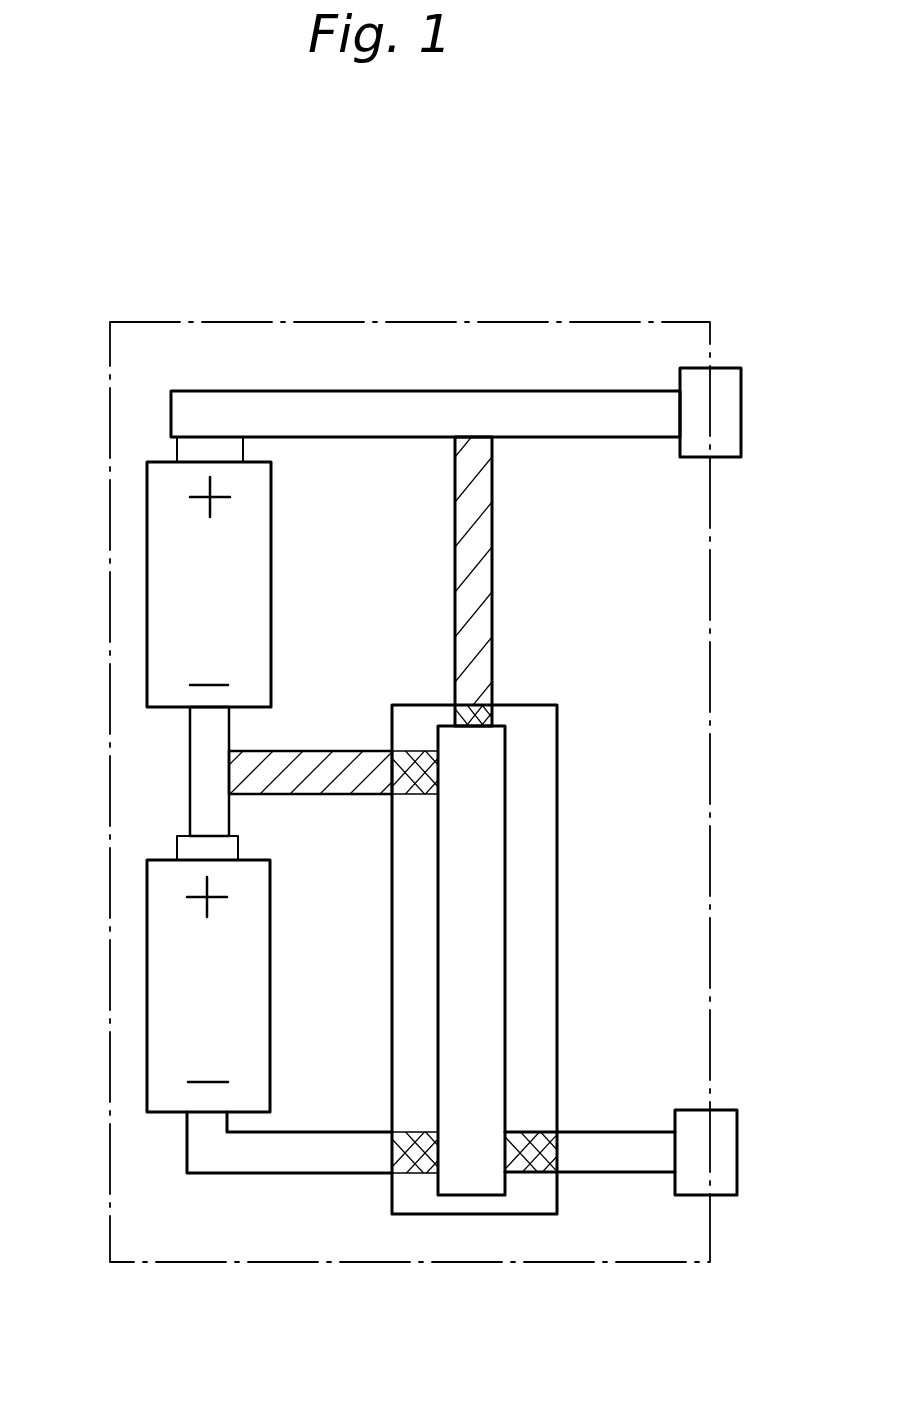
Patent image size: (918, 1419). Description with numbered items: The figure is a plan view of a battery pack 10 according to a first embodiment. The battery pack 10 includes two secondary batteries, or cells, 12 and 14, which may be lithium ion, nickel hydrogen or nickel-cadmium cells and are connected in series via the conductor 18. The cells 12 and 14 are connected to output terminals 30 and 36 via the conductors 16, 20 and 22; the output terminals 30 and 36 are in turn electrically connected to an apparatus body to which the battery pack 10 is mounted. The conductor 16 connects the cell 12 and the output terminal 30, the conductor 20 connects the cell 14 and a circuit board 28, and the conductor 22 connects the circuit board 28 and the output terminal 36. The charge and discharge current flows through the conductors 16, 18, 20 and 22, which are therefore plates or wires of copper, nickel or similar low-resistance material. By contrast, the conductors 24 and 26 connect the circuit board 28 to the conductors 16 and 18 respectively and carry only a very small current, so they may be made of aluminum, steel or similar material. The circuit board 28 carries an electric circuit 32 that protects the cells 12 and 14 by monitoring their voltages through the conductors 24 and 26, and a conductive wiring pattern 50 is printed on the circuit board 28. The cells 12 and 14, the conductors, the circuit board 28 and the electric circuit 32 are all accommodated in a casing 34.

The battery pack 10 is at (430, 190).
The secondary battery 12 is at (272, 528).
The secondary battery 14 is at (270, 931).
The conductor 16 is at (272, 391).
The conductor 18 is at (188, 774).
The conductor 20 is at (303, 1174).
The conductor 22 is at (618, 1174).
The conductor 24 is at (492, 552).
The conductor 26 is at (309, 751).
The circuit board 28 is at (557, 905).
The output terminal 30 is at (729, 458).
The electric circuit 32 is at (507, 820).
The casing 34 is at (480, 322).
The output terminal 36 is at (726, 1196).
The conductive wiring pattern 50 is at (496, 722).